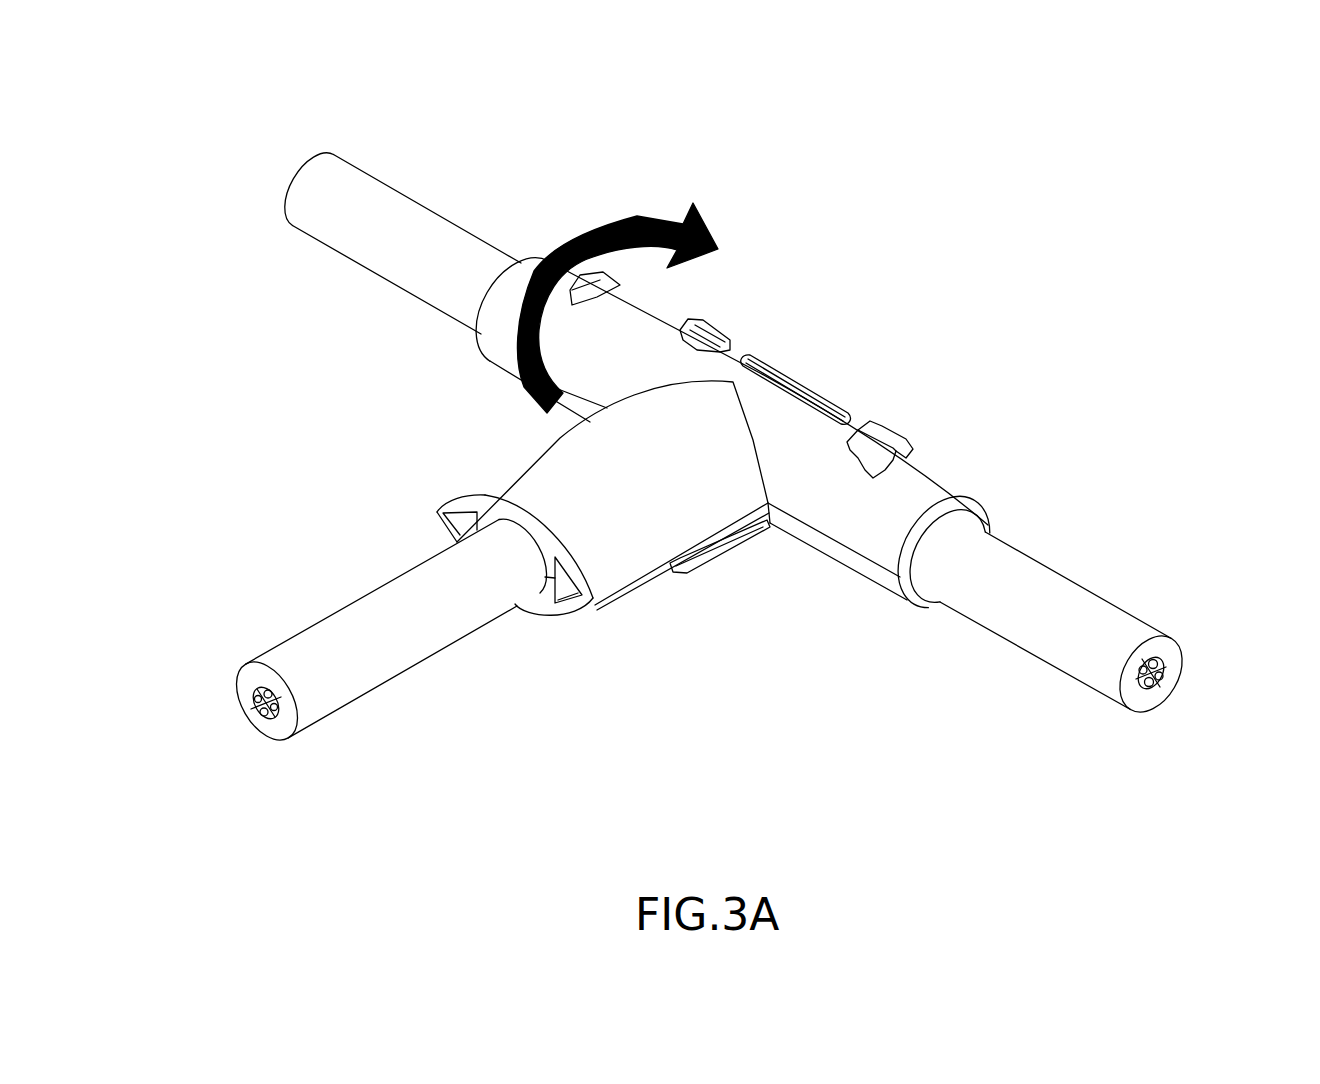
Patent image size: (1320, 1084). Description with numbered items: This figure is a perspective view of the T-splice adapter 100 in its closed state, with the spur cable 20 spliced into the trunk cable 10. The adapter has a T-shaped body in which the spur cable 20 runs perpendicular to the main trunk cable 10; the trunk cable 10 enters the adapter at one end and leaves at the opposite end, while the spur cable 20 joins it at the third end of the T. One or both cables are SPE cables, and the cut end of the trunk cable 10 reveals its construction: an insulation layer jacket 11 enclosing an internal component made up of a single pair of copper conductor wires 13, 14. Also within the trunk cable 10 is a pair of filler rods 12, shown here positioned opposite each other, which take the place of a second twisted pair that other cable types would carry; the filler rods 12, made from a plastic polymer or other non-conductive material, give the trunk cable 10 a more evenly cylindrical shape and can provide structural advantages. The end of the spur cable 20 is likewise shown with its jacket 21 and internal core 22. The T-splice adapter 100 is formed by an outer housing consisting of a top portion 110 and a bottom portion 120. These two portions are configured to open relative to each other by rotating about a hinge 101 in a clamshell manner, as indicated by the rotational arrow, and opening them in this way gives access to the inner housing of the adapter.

The T-splice adapter 100 is at (1137, 144).
The trunk cable 10 is at (402, 224).
The insulation layer jacket 11 is at (1173, 650).
The filler rods 12 is at (1152, 655).
The copper conductor wire 13 is at (1137, 683).
The copper conductor wire 14 is at (1163, 668).
The spur cable 20 is at (385, 607).
The outer jacket of second cable 21 is at (243, 685).
The core of second cable 22 is at (250, 706).
The hinge 101 is at (805, 378).
The top portion 110 is at (490, 512).
The bottom portion 120 is at (542, 604).